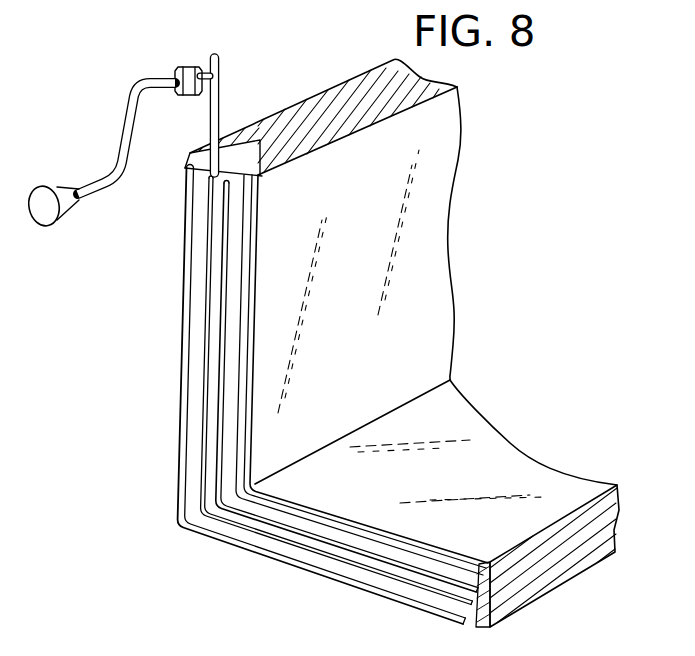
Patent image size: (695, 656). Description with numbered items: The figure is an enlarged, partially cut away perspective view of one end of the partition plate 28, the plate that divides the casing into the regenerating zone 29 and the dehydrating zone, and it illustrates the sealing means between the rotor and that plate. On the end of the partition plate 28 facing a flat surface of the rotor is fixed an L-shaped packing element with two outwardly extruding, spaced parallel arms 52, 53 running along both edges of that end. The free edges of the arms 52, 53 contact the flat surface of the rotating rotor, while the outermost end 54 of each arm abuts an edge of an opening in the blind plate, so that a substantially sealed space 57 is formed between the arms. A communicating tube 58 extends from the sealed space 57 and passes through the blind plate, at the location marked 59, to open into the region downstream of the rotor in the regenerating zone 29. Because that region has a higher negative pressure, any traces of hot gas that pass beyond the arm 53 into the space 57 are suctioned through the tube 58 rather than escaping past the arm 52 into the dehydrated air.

The partition plate 28 is at (542, 497).
The regenerating zone 29 is at (525, 270).
The arm of packing element 52 is at (182, 438).
The arm of packing element 53 is at (218, 463).
The outermost end of arm 54 is at (188, 164).
The sealed space 57 is at (215, 355).
The communicating tube 58 is at (135, 138).
The passage of communicating tube through blind plate 59 is at (219, 93).